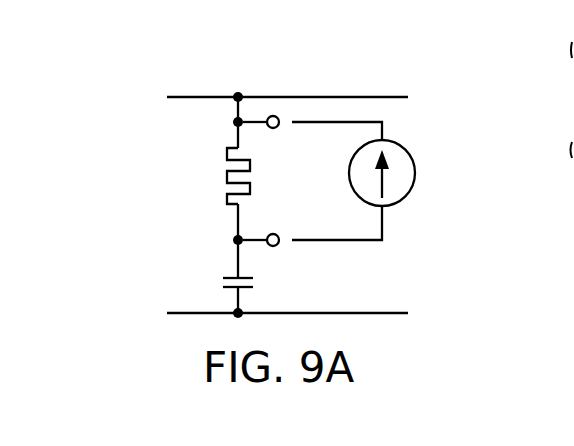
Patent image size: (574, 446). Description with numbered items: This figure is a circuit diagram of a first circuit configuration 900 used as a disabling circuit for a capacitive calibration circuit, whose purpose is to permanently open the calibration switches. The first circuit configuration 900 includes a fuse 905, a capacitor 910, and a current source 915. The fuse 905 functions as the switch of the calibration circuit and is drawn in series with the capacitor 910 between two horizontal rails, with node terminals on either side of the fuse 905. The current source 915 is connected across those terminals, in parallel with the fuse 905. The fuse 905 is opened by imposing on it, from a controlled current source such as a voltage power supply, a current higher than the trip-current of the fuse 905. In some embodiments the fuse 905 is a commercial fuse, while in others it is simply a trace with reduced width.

The first circuit configuration 900 is at (130, 58).
The fuse 905 is at (226, 152).
The capacitor 910 is at (233, 276).
The current source 915 is at (415, 173).